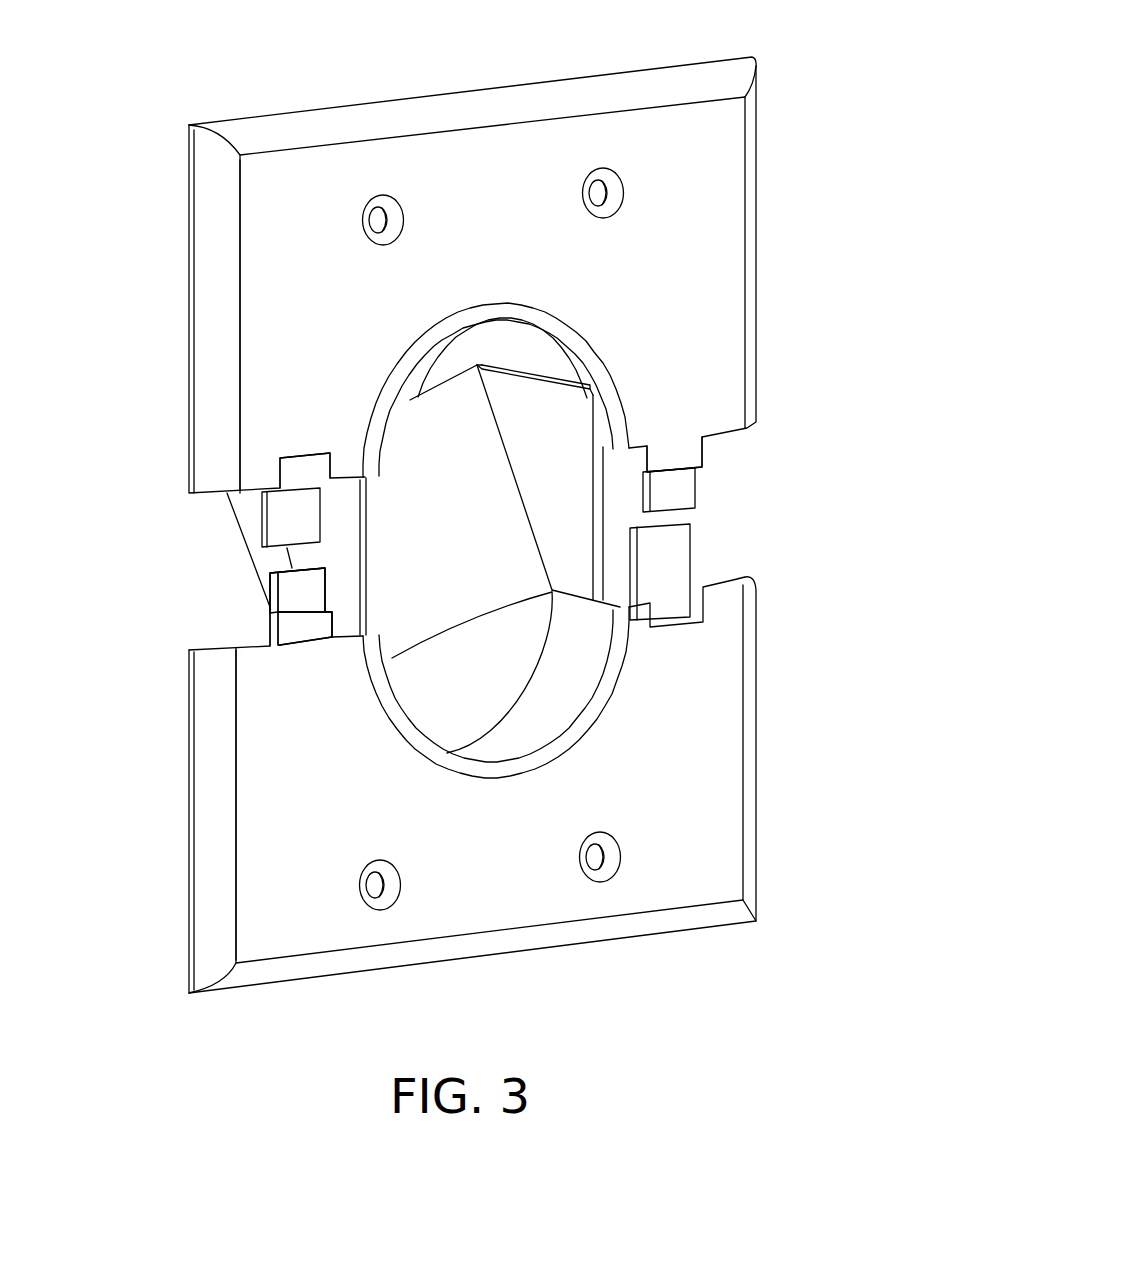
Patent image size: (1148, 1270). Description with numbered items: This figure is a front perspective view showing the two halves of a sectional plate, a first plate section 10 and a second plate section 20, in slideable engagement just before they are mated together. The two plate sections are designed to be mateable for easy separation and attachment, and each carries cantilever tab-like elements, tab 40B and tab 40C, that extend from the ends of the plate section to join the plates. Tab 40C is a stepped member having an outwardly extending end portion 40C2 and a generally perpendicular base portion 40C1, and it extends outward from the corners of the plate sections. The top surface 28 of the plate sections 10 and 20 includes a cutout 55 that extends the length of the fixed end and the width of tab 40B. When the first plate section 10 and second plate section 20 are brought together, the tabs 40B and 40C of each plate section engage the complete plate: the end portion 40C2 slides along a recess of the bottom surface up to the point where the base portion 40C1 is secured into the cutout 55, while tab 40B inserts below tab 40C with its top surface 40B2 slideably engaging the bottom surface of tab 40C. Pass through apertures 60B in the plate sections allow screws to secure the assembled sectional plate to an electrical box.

The first plate section 10 is at (788, 729).
The second plate section 20 is at (797, 241).
The top surface 28 is at (298, 267).
The pass through apertures 60B is at (597, 195).
The tab 40B is at (212, 538).
The tab top surface 40B2 is at (307, 467).
The tab 40C is at (202, 612).
The base portion 40C1 is at (300, 630).
The end portion 40C2 is at (287, 598).
The cutout 55 is at (253, 533).